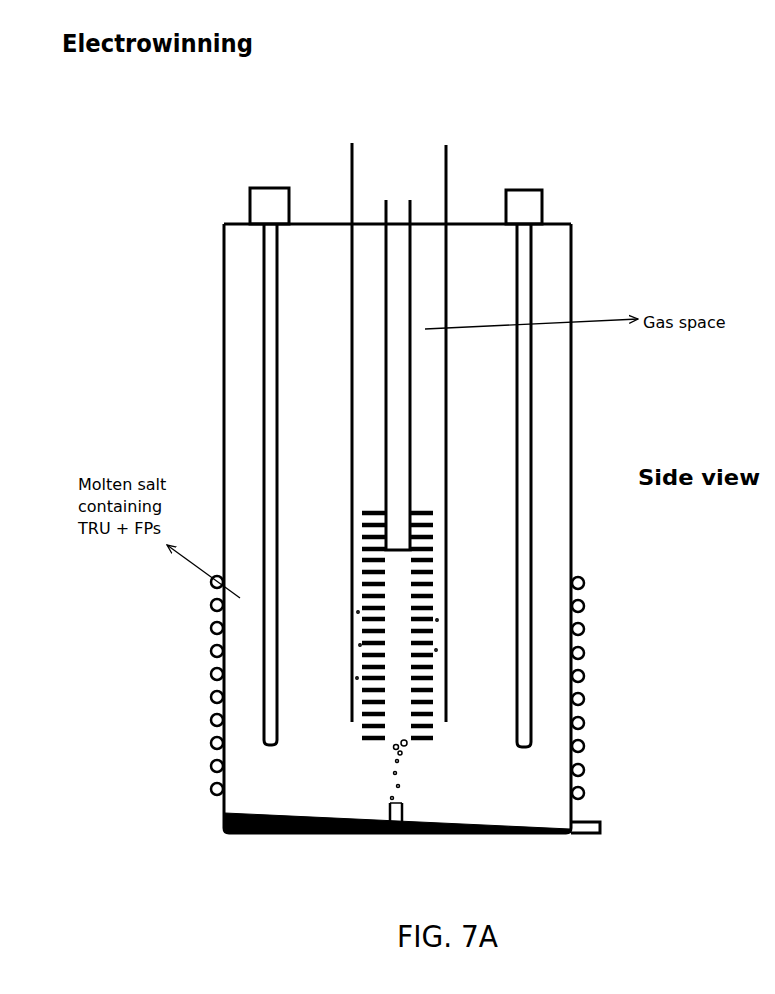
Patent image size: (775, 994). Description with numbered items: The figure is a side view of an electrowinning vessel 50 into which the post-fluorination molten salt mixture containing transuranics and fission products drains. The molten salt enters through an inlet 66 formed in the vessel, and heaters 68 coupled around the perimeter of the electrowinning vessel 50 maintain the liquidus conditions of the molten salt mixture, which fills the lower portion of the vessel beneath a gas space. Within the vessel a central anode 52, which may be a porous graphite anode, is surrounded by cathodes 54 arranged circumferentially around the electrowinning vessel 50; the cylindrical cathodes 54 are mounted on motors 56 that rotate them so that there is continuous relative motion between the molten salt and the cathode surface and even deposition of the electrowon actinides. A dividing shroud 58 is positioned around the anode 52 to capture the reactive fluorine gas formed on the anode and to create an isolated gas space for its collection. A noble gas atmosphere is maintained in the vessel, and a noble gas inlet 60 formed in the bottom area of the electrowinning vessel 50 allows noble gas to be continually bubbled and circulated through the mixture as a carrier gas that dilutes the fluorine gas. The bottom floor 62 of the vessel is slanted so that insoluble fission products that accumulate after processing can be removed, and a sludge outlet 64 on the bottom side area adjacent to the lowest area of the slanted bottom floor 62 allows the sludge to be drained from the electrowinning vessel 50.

The electrowinning vessel 50 is at (545, 125).
The central anode 52 is at (358, 739).
The cathodes 54 is at (533, 421).
The motors 56 is at (545, 198).
The dividing shroud 58 is at (449, 502).
The noble gas inlet 60 is at (408, 816).
The bottom floor 62 is at (276, 836).
The sludge outlet 64 is at (587, 818).
The inlet 66 is at (399, 199).
The heaters 68 is at (212, 676).